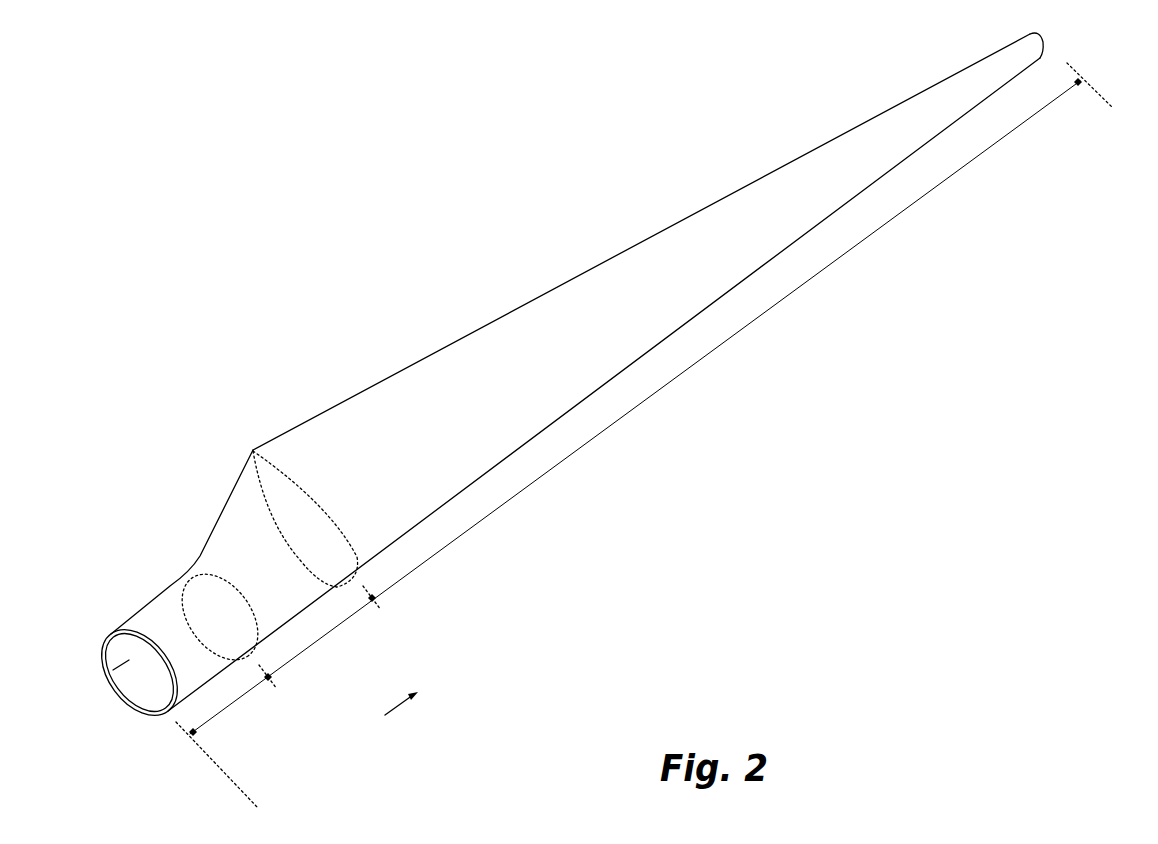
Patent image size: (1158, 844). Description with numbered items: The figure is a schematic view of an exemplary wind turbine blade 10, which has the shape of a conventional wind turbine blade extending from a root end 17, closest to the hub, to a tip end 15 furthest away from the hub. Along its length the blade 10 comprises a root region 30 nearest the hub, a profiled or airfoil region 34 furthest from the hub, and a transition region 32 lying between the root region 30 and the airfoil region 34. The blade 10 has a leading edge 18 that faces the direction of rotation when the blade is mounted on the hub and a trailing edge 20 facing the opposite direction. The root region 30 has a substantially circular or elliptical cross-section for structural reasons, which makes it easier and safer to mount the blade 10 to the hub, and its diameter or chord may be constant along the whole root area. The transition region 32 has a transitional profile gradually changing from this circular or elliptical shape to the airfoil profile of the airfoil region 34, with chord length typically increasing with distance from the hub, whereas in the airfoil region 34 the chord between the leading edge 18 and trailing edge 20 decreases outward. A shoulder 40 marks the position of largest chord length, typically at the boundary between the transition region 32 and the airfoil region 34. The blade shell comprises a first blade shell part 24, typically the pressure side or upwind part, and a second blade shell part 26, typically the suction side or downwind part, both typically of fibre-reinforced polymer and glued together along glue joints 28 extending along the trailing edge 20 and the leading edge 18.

The wind turbine blade 10 is at (604, 406).
The tip end 15 is at (1043, 38).
The root end 17 is at (106, 672).
The leading edge 18 is at (759, 272).
The trailing edge 20 is at (637, 243).
The first blade shell part 24 is at (138, 622).
The second blade shell part 26 is at (140, 712).
The glue joints 28 is at (132, 627).
The root region 30 is at (232, 702).
The transition region 32 is at (327, 635).
The airfoil region 34 is at (650, 435).
The shoulder 40 is at (253, 450).